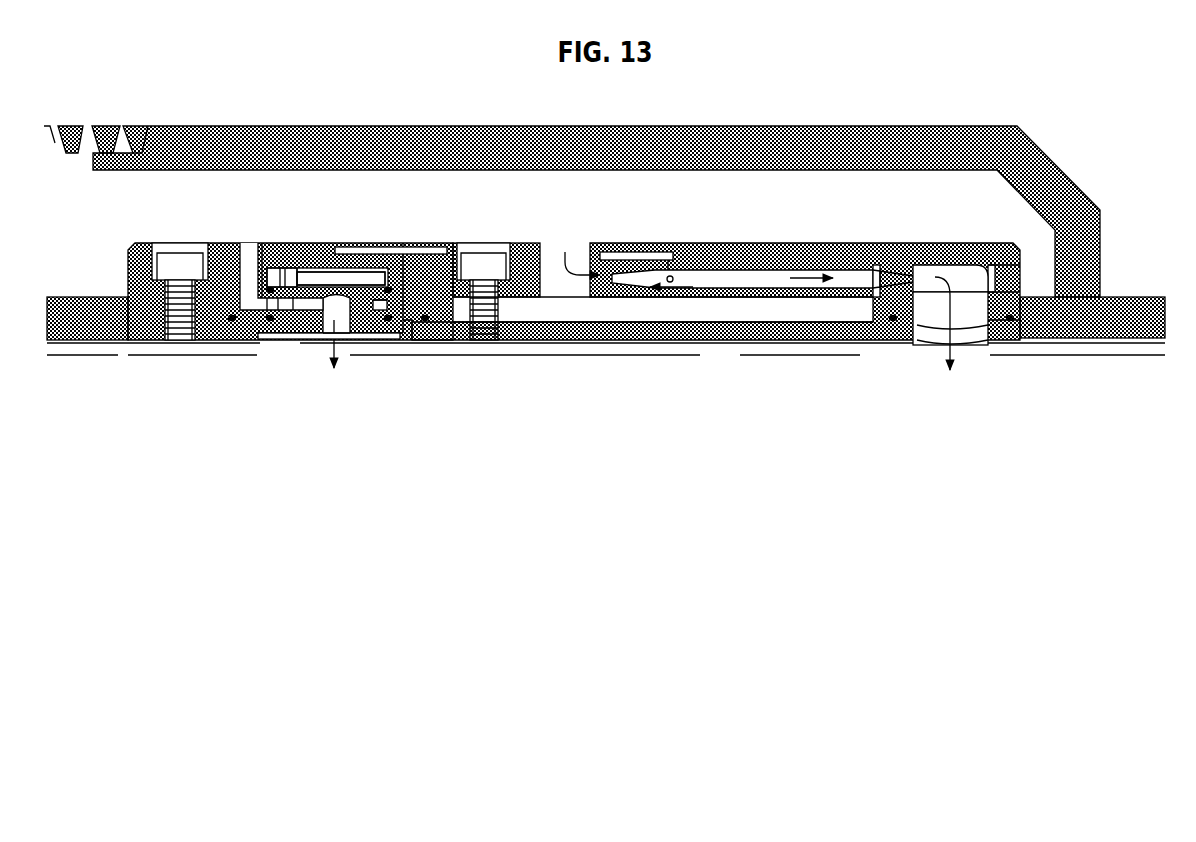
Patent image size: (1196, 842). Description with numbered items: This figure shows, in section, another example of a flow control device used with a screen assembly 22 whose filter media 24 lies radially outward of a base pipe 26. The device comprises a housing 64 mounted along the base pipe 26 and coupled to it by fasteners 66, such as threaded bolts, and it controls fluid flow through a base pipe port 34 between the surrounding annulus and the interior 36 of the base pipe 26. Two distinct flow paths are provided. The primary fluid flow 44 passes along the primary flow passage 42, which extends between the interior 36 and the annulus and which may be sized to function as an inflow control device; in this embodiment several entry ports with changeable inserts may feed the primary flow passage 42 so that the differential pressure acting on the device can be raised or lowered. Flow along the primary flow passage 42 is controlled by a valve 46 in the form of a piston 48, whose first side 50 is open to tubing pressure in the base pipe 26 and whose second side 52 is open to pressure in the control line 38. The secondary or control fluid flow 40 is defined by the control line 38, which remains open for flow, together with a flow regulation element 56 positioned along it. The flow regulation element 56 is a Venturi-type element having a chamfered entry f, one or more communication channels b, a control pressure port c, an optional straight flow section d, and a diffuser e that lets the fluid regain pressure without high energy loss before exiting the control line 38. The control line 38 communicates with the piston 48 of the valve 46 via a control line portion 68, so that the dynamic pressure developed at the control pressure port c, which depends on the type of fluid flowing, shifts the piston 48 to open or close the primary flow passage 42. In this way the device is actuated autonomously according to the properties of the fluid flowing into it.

The screen assembly 22 is at (160, 105).
The filter media 24 is at (73, 126).
The base pipe 26 is at (1135, 297).
The base pipe port 34 is at (291, 340).
The interior 36 is at (514, 410).
The control line 38 is at (755, 272).
The control fluid flow 40 is at (565, 248).
The primary flow passage 42 is at (240, 276).
The primary fluid flow 44 is at (250, 262).
The valve 46 is at (310, 258).
The piston 48 is at (290, 265).
The first side 50 is at (374, 342).
The second side 52 is at (357, 262).
The flow regulation element 56 is at (884, 264).
The housing 64 is at (955, 243).
The fasteners 66 is at (168, 252).
The control line portion 68 is at (410, 247).
The communication channels b is at (672, 262).
The control pressure port c is at (672, 283).
The straight flow section d is at (770, 280).
The diffuser e is at (890, 283).
The chamfered entry f is at (648, 288).